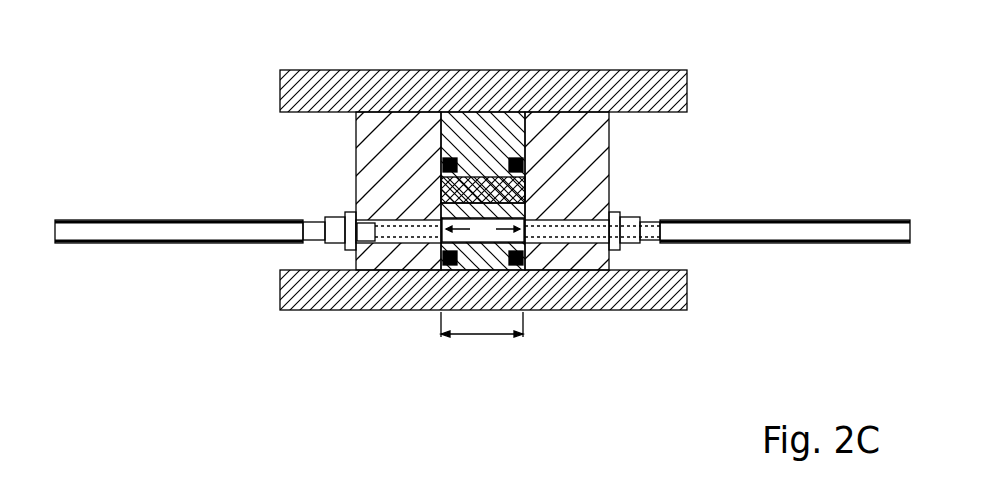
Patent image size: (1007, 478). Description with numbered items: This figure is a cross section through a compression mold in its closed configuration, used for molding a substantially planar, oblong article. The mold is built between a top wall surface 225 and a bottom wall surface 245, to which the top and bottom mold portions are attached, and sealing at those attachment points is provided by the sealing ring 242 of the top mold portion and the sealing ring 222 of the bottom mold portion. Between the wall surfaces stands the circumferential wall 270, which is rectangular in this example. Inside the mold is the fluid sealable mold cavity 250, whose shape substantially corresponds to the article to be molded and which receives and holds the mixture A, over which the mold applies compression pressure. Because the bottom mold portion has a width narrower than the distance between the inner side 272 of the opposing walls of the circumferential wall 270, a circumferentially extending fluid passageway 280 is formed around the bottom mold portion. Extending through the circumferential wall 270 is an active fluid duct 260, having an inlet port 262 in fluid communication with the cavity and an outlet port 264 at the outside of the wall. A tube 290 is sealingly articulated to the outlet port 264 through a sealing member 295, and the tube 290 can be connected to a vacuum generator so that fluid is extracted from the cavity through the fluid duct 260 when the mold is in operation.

The top wall surface 225 is at (668, 70).
The bottom wall surface 245 is at (583, 310).
The circumferential wall 270 is at (356, 140).
The sealing ring 222 is at (528, 252).
The sealing ring 242 is at (528, 125).
The mold cavity 250 is at (528, 165).
The fluid passageway 280 is at (528, 190).
The mixture A is at (487, 178).
The fluid duct 260 is at (400, 228).
The outlet port 264 is at (385, 235).
The inlet port 262 is at (470, 300).
The tube 290 is at (115, 243).
The sealing member 295 is at (346, 214).
The inner side 272 is at (728, 219).